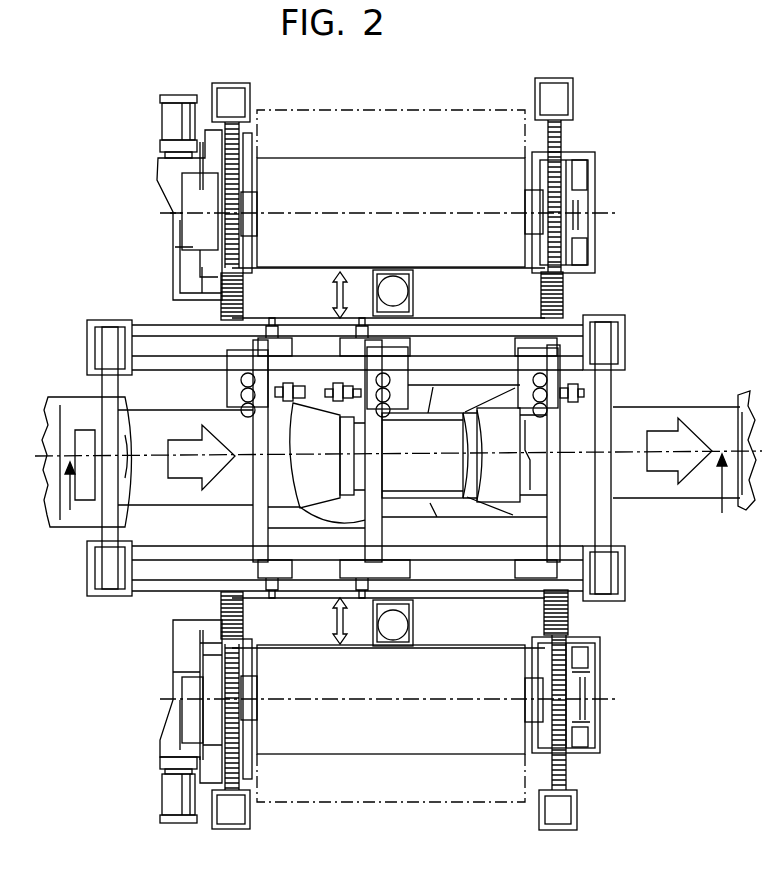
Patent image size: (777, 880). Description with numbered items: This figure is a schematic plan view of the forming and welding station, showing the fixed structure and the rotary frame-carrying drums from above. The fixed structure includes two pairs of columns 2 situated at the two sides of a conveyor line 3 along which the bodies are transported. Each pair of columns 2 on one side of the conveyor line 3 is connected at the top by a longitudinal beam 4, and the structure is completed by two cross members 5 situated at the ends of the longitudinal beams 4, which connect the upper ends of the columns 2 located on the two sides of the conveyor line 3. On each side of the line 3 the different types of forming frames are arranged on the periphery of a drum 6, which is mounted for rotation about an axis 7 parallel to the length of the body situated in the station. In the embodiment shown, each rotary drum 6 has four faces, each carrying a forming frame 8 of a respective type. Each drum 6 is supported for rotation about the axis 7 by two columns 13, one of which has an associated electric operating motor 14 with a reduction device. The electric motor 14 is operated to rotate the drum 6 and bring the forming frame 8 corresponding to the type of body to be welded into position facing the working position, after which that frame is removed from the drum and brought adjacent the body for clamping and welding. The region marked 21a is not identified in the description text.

The columns 2 is at (90, 322).
The conveyor line 3 is at (394, 507).
The longitudinal beam 4 is at (152, 335).
The cross members 5 is at (400, 157).
The drum 6 is at (366, 754).
The axis 7 is at (600, 215).
The forming frame 8 is at (480, 110).
The columns 13 is at (175, 232).
The electric operating motor 14 is at (168, 108).
The roll core 21a is at (433, 386).